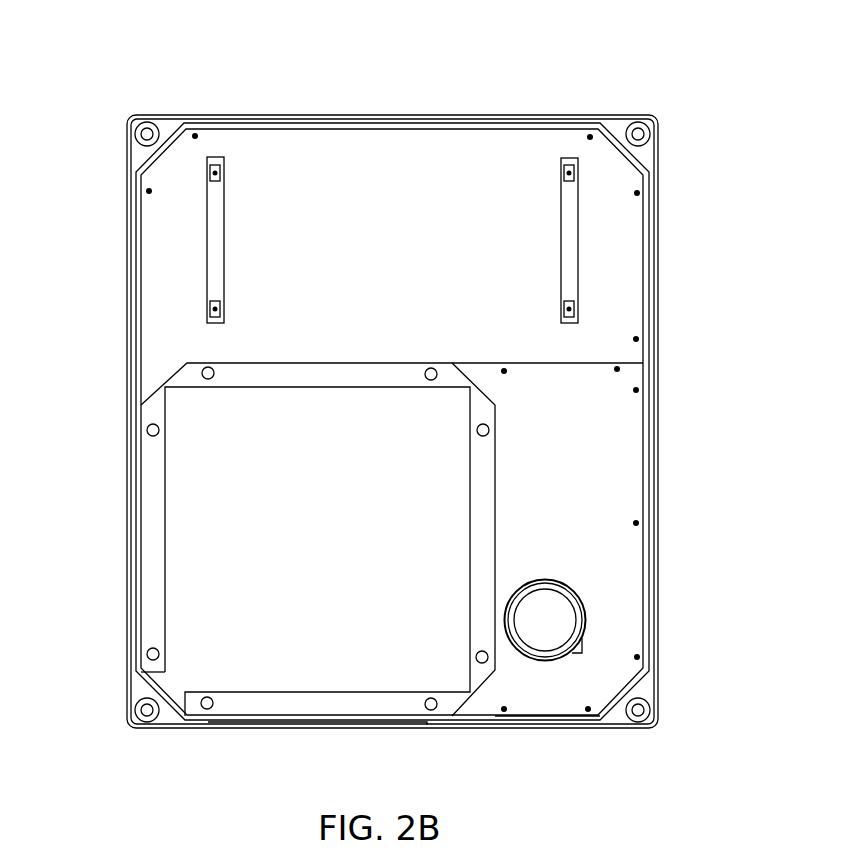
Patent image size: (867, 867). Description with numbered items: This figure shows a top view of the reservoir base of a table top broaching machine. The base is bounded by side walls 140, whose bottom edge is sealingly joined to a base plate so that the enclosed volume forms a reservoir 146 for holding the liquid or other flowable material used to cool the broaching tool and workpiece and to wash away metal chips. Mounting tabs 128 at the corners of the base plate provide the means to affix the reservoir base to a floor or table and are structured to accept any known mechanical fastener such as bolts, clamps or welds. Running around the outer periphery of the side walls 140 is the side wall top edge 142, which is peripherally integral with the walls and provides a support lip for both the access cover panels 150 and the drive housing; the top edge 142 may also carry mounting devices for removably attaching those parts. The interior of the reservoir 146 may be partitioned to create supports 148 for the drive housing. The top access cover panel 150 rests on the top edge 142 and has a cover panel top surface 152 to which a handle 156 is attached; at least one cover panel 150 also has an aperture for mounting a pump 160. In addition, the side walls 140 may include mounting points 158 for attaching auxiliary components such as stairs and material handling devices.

The mounting tab 128 is at (424, 373).
The side wall 140 is at (340, 421).
The side wall top edge 142 is at (155, 512).
The reservoir 146 is at (210, 596).
The support 148 is at (293, 372).
The top access cover panel 150 is at (600, 473).
The cover panel top surface 152 is at (613, 293).
The handle 156 is at (569, 251).
The mounting point 158 is at (303, 728).
The pump 160 is at (545, 621).